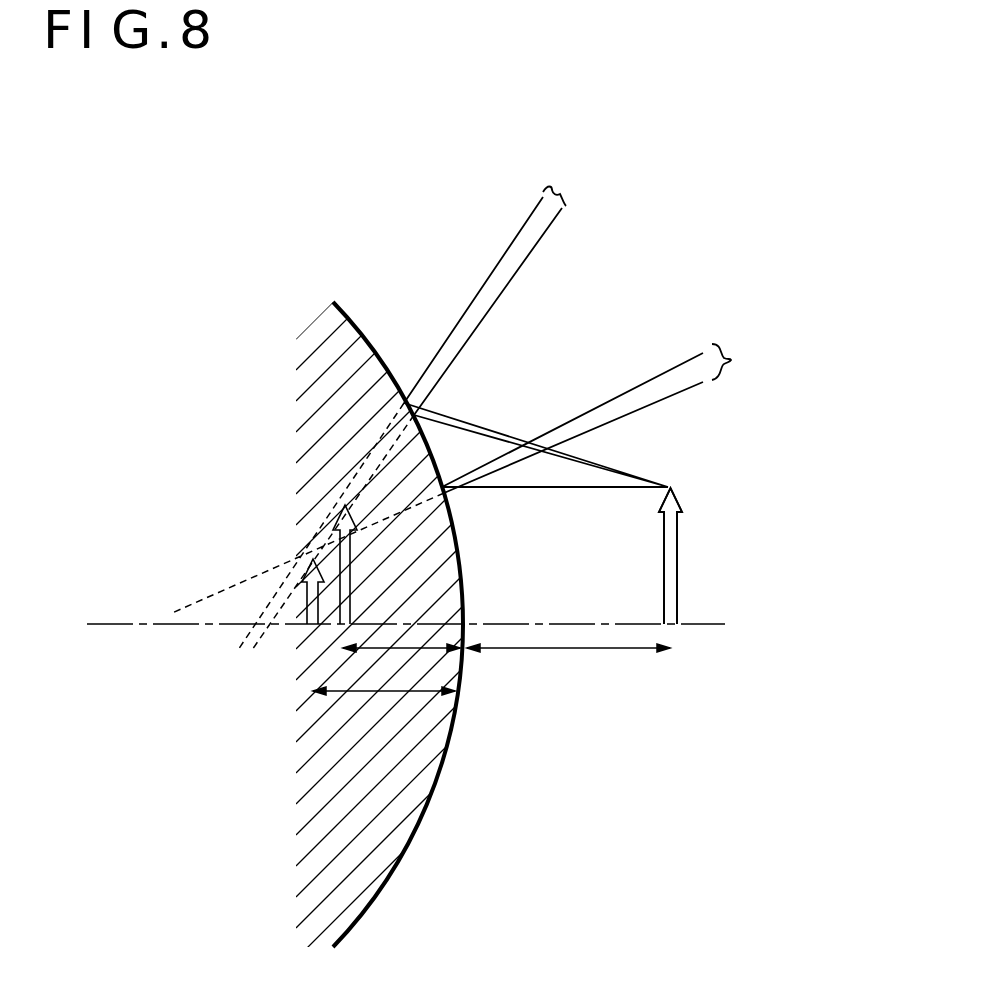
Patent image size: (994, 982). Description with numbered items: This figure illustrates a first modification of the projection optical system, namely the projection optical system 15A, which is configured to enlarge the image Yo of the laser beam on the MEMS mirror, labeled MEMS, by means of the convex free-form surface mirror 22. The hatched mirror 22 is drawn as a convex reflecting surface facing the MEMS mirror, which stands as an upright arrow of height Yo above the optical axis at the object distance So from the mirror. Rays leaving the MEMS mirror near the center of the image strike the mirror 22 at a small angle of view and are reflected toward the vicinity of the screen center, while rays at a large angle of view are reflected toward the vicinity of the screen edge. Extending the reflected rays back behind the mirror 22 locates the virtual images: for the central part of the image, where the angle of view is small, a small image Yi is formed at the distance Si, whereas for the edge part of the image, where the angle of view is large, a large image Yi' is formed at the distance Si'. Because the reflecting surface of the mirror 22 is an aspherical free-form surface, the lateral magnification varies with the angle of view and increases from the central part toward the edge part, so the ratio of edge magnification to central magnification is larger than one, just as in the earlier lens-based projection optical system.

The convex free-form surface mirror 22 is at (376, 348).
The projection optical system 15A is at (489, 151).
The MEMS mirror MEMS is at (668, 533).
The image of the laser beam on the MEMS mirror Yo is at (685, 556).
The large image Yi' is at (434, 564).
The small image Yi is at (414, 591).
The distance of the large image Si' is at (441, 692).
The distance of the small image Si is at (405, 753).
The object distance So is at (568, 666).